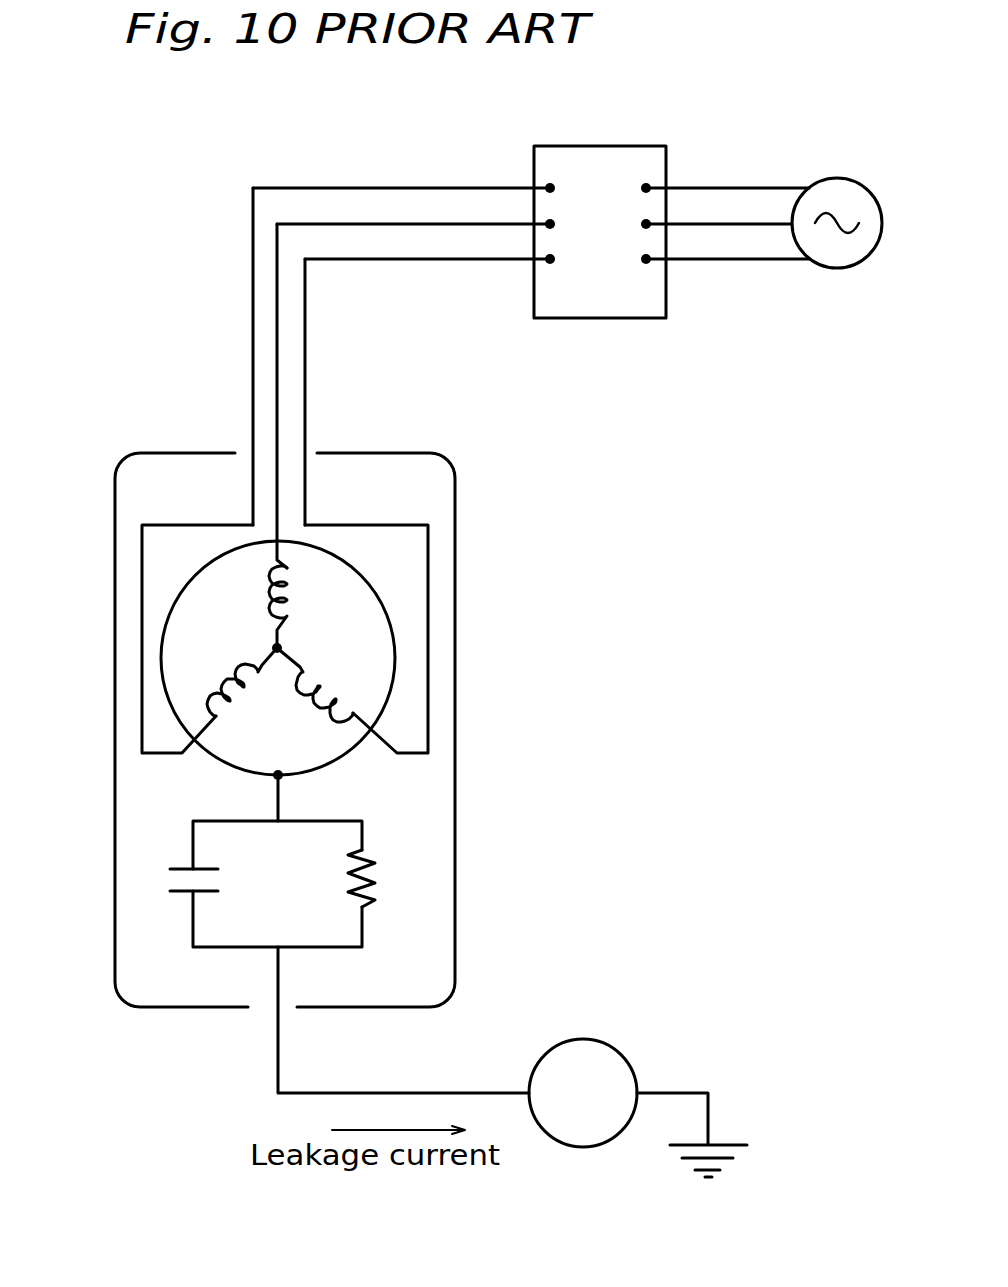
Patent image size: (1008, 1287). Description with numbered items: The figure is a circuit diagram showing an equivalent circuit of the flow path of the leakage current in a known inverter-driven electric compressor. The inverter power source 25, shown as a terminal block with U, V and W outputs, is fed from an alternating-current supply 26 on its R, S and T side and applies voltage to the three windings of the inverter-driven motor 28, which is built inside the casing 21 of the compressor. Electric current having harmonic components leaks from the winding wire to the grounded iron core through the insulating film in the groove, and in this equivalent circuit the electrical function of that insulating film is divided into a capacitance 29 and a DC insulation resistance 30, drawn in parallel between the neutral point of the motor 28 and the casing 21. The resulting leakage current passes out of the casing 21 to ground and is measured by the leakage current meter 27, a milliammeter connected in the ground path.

The casing 21 is at (448, 472).
The inverter power source 25 is at (640, 160).
The AC power supply 26 is at (832, 195).
The leakage current meter 27 is at (617, 1048).
The inverter-driven motor 28 is at (383, 600).
The capacitance 29 is at (167, 880).
The DC insulation resistance 30 is at (380, 887).